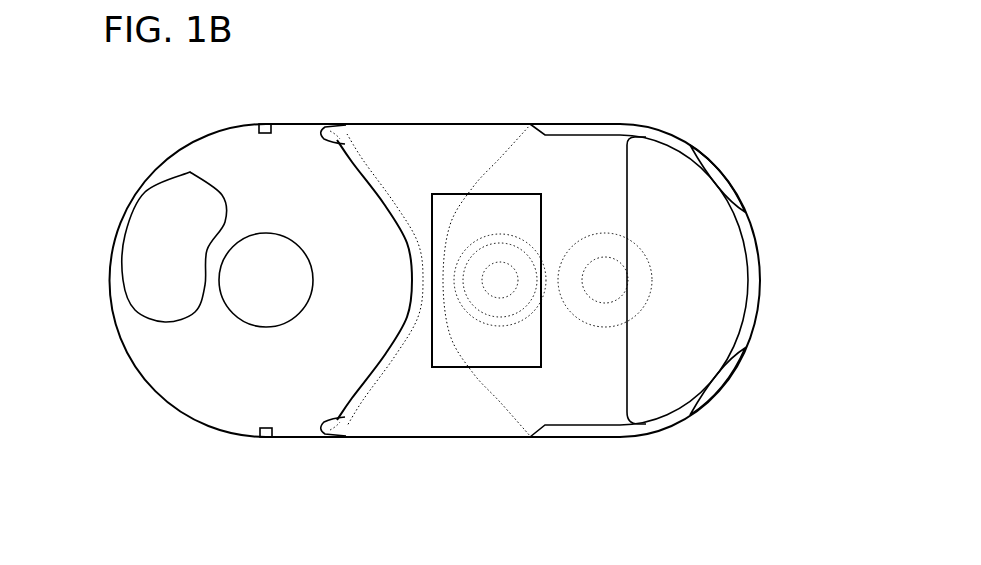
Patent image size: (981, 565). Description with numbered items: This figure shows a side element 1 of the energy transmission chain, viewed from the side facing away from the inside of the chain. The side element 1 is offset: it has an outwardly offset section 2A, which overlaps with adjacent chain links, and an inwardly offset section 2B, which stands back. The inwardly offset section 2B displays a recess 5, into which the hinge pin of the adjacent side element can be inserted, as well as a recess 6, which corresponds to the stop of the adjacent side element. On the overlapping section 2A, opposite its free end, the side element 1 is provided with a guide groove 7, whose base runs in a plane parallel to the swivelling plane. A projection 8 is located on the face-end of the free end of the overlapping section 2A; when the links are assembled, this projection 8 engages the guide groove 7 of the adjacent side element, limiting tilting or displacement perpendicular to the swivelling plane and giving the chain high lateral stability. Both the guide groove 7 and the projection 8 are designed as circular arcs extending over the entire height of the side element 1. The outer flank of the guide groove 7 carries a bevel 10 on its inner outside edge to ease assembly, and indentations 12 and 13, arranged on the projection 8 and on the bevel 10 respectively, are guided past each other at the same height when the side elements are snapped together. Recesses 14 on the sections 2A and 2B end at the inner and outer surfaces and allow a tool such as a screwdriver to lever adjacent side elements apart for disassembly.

The side element 1 is at (475, 285).
The outwardly offset section 2A is at (645, 160).
The inwardly offset section 2B is at (218, 155).
The recess 5 is at (262, 310).
The recess 6 is at (172, 302).
The guide groove 7 is at (398, 245).
The projection 8 is at (754, 282).
The bevel 10 is at (328, 127).
The indentation 12 is at (710, 171).
The indentation 13 is at (332, 146).
The recess 14 is at (263, 123).